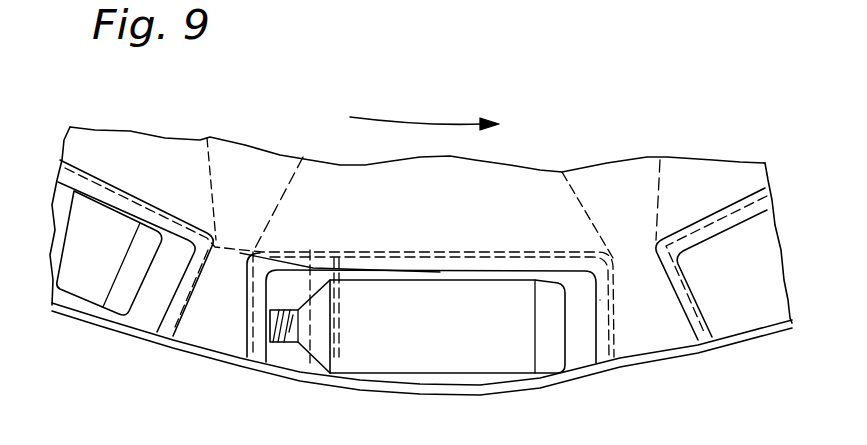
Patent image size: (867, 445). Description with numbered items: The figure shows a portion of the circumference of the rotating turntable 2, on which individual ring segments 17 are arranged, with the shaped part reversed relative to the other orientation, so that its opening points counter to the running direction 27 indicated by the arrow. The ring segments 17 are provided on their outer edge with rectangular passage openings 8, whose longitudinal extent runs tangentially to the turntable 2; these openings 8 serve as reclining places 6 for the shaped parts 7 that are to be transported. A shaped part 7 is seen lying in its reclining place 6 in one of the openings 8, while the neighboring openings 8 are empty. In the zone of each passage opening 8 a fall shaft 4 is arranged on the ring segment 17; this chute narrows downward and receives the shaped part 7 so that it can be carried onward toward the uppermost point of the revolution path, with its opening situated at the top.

The turntable 2 is at (421, 231).
The ring segment 17 is at (270, 160).
The running direction 27 is at (427, 122).
The fall shaft 4 is at (540, 178).
The reclining place 6 is at (142, 315).
The shaped part 7 is at (88, 288).
The passage opening 8 is at (580, 360).